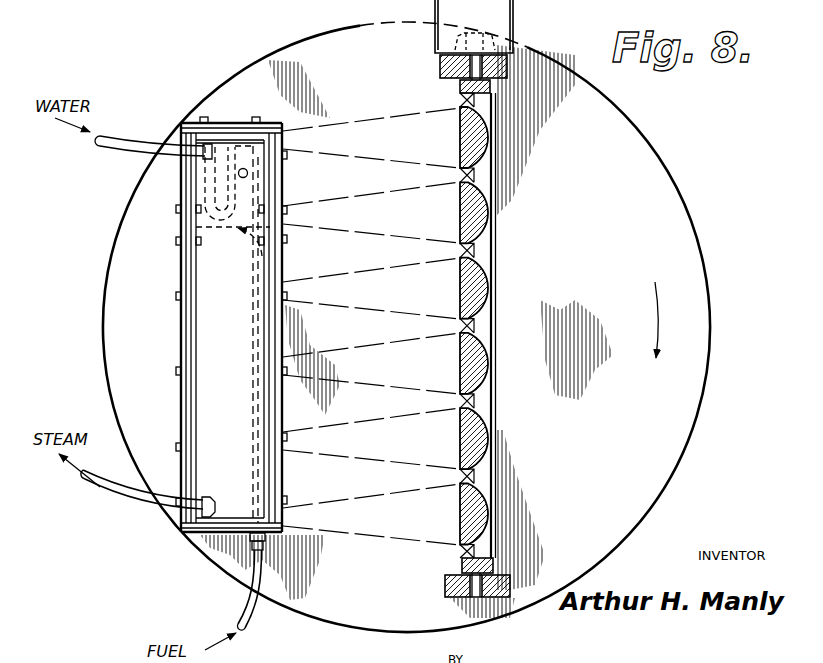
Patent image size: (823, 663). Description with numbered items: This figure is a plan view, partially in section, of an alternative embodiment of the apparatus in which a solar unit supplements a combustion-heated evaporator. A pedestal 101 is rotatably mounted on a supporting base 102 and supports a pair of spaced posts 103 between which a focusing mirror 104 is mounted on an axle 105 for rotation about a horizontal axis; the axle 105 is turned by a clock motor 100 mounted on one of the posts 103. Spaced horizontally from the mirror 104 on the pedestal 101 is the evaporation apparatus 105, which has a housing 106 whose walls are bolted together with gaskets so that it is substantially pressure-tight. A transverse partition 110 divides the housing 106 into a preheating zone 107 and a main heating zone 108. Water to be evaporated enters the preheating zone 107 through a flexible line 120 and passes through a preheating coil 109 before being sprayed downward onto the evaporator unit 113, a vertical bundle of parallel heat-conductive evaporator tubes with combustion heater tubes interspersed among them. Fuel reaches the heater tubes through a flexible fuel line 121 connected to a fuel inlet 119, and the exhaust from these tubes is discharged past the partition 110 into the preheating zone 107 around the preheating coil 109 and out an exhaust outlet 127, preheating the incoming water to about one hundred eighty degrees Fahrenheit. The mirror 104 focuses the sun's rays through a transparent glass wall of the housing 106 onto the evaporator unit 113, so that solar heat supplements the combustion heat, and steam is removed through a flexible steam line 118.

The clock motor 100 is at (514, 4).
The pedestal 101 is at (642, 160).
The supporting base 102 is at (398, 23).
The spaced posts 103 is at (505, 62).
The focusing mirror 104 is at (490, 222).
The axle 105 is at (179, 270).
The housing 106 is at (186, 318).
The preheating zone 107 is at (196, 173).
The main heating zone 108 is at (211, 396).
The preheating coil 109 is at (220, 141).
The transverse partition 110 is at (268, 252).
The evaporator unit 113 is at (250, 310).
The flexible steam line 118 is at (106, 489).
The fuel inlet 119 is at (255, 541).
The flexible line 120 is at (132, 141).
The flexible fuel line 121 is at (254, 622).
The exhaust outlet 127 is at (248, 173).